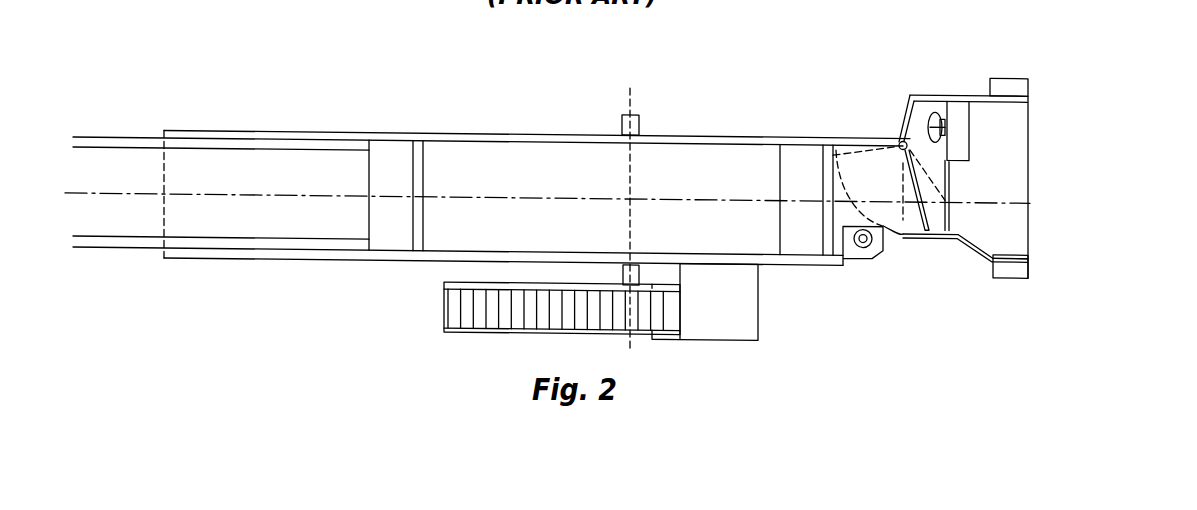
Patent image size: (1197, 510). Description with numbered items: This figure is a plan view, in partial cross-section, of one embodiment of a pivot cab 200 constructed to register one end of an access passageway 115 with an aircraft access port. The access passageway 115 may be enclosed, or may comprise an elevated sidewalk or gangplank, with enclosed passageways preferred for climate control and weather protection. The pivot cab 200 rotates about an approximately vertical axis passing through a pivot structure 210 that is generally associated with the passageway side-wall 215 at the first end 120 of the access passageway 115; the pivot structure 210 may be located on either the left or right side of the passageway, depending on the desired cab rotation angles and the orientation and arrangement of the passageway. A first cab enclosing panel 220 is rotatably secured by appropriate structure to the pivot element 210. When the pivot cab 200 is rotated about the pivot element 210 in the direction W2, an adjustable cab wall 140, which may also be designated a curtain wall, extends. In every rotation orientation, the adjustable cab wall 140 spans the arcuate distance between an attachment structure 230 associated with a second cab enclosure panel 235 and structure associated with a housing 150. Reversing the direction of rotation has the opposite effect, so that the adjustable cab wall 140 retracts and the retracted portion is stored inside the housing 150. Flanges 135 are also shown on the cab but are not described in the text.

The access passageway 115 is at (510, 129).
The passageway side-wall 215 is at (722, 127).
The first end 120 is at (826, 117).
The pivot structure 210 is at (899, 130).
The first cab enclosing panel 220 is at (908, 102).
The flange 135 is at (1010, 79).
The pivot cab 200 is at (1067, 97).
The housing 150 is at (870, 249).
The adjustable cab wall 140 is at (885, 222).
The attachment structure 230 is at (903, 229).
The second cab enclosure panel 235 is at (932, 231).
The direction of rotation W2 is at (1097, 228).